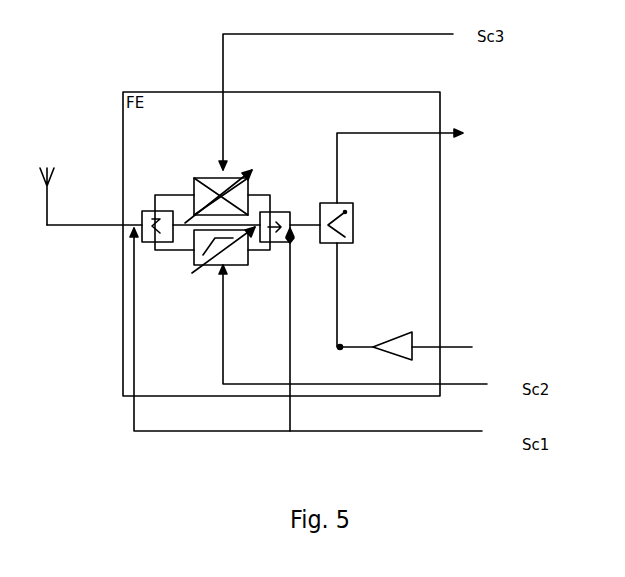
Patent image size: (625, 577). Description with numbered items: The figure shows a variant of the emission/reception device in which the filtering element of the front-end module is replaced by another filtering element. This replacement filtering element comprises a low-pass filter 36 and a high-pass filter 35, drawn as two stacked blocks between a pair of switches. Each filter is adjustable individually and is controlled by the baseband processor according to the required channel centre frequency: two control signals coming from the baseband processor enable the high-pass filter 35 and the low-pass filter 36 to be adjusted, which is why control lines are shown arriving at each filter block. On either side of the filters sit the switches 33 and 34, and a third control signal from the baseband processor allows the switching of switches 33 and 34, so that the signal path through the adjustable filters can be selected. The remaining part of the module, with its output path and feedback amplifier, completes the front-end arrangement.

The switch 33 is at (151, 217).
The switch 34 is at (277, 217).
The high-pass filter 35 is at (223, 257).
The low-pass filter 36 is at (218, 191).